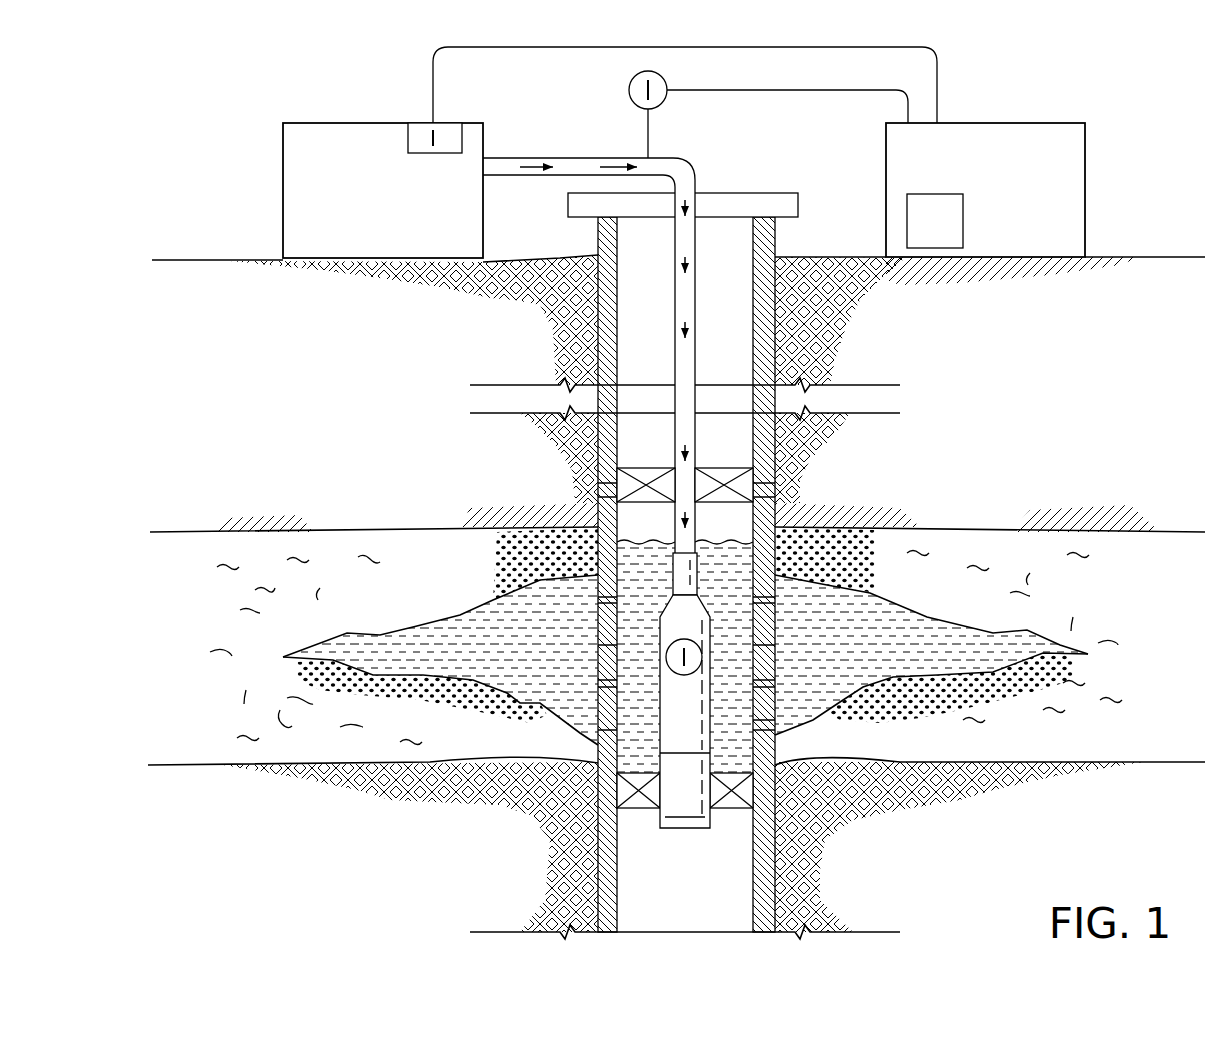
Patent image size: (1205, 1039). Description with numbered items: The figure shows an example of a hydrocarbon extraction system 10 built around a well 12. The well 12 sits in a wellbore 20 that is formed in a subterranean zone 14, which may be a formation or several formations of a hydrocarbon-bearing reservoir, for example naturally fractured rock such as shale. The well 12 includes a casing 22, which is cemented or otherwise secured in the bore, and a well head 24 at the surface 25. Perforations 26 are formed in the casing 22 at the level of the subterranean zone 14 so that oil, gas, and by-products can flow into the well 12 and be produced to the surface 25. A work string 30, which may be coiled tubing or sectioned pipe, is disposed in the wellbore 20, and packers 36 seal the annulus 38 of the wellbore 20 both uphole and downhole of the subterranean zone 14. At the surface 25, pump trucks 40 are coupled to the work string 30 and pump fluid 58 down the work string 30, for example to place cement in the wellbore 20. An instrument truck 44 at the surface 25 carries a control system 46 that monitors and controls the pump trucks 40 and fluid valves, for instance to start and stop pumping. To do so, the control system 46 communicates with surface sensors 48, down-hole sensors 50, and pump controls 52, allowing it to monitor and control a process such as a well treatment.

The hydrocarbon extraction system 10 is at (965, 87).
The well 12 is at (722, 172).
The subterranean zone 14 is at (1073, 592).
The wellbore 20 is at (753, 293).
The casing 22 is at (617, 337).
The well head 24 is at (778, 192).
The surface 25 is at (818, 253).
The perforations 26 is at (505, 598).
The work string 30 is at (695, 440).
The packers 36 is at (727, 504).
The annulus 38 is at (736, 354).
The pump trucks 40 is at (347, 122).
The instrument truck 44 is at (1035, 122).
The control system 46 is at (922, 233).
The surface sensors 48 is at (632, 101).
The down-hole sensors 50 is at (684, 676).
The pump controls 52 is at (408, 138).
The fluid 58 is at (545, 158).